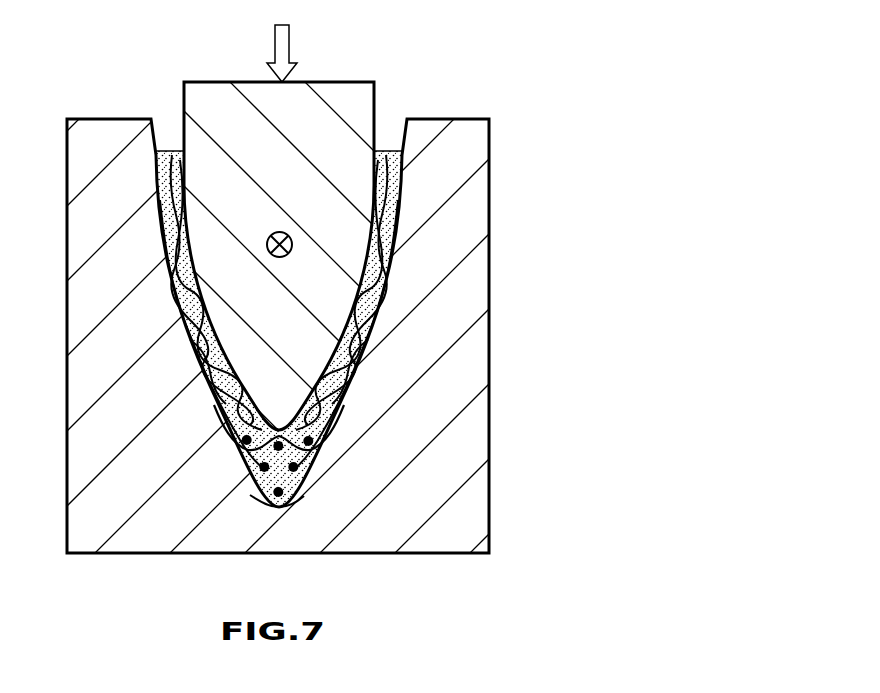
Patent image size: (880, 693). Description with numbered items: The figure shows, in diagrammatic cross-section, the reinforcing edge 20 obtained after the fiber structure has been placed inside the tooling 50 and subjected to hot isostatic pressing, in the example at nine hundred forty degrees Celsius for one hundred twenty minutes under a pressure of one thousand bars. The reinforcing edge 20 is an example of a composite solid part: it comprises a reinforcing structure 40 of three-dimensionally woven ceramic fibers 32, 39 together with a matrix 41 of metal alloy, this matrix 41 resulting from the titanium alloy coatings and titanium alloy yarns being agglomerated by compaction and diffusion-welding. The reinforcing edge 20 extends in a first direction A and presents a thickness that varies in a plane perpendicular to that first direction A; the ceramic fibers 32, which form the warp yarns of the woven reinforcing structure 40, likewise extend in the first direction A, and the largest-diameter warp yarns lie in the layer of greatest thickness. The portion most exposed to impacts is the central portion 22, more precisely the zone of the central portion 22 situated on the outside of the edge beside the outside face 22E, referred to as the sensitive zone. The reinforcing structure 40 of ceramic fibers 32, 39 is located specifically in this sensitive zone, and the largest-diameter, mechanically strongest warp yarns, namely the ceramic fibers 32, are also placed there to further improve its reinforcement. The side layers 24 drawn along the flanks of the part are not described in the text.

The tooling 50 is at (489, 116).
The reinforcing edge 20 is at (363, 390).
The central portion 22 is at (325, 505).
The outside face 22E is at (285, 508).
The preform side layers 24 is at (165, 180).
The ceramic fibers 39 is at (200, 390).
The matrix 41 is at (235, 452).
The ceramic fibers 32 is at (299, 463).
The reinforcing structure 40 is at (259, 493).
The first direction A is at (275, 233).